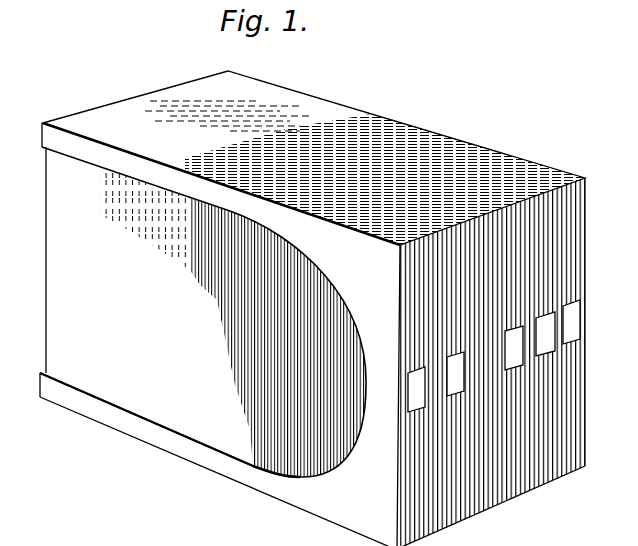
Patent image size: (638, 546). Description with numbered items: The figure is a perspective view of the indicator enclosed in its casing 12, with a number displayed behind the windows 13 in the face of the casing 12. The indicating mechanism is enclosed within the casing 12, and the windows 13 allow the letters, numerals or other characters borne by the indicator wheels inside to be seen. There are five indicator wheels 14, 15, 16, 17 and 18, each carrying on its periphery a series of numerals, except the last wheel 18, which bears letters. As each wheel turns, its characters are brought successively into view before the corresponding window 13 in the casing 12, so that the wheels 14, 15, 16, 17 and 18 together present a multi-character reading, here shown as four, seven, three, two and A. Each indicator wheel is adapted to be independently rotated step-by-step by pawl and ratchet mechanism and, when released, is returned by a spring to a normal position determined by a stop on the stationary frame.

The casing 12 is at (314, 158).
The windows 13 is at (426, 367).
The indicator wheel 14 is at (423, 410).
The indicator wheel 15 is at (453, 396).
The indicator wheel 16 is at (512, 371).
The indicator wheel 17 is at (545, 357).
The indicator wheel 18 is at (571, 345).